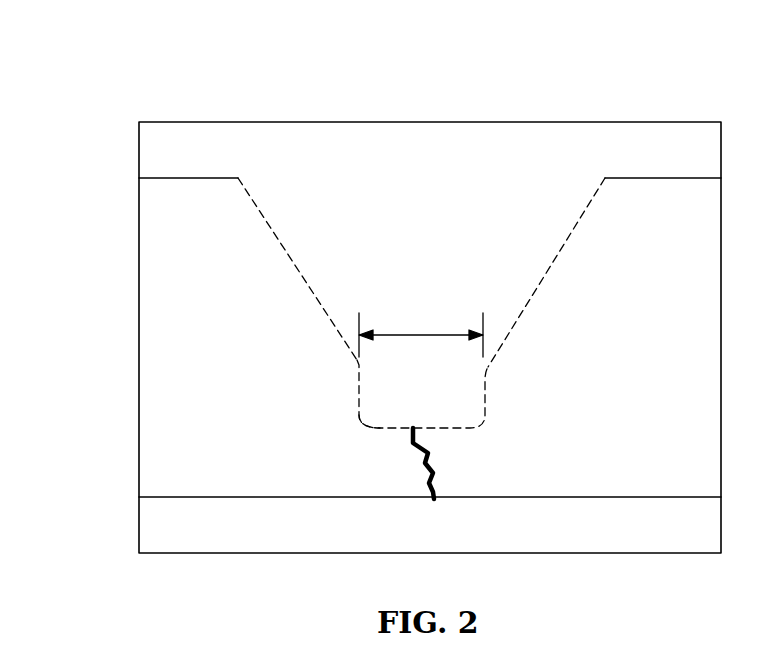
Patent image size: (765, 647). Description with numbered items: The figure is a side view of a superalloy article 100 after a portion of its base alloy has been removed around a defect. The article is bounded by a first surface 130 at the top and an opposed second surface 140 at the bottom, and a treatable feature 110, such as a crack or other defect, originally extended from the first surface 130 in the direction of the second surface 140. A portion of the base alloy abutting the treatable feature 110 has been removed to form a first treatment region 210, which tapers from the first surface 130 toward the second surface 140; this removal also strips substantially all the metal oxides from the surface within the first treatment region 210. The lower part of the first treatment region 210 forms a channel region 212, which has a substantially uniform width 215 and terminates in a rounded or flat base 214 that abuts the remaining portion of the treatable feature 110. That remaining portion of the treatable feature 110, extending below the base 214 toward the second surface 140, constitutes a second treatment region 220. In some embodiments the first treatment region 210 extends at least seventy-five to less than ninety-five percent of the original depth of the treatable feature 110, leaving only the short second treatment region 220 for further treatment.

The superalloy article 100 is at (170, 62).
The treatable feature 110 is at (437, 463).
The first surface 130 is at (173, 146).
The second surface 140 is at (160, 522).
The first treatment region 210 is at (292, 200).
The channel region 212 is at (408, 395).
The rounded or flat base 214 is at (380, 427).
The substantially uniform width 215 is at (421, 335).
The second treatment region 220 is at (431, 455).